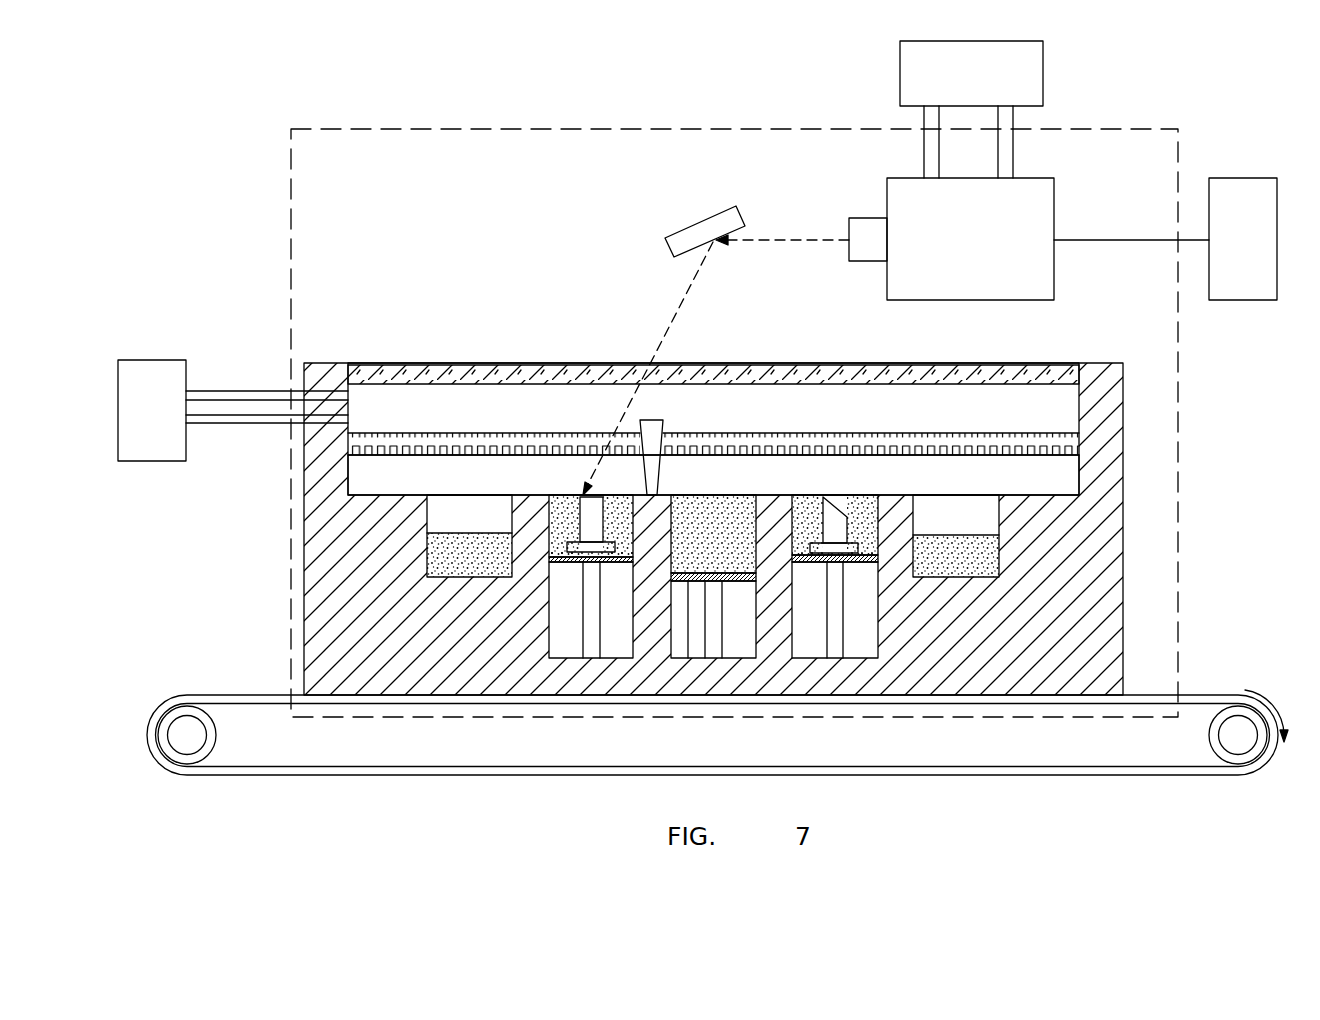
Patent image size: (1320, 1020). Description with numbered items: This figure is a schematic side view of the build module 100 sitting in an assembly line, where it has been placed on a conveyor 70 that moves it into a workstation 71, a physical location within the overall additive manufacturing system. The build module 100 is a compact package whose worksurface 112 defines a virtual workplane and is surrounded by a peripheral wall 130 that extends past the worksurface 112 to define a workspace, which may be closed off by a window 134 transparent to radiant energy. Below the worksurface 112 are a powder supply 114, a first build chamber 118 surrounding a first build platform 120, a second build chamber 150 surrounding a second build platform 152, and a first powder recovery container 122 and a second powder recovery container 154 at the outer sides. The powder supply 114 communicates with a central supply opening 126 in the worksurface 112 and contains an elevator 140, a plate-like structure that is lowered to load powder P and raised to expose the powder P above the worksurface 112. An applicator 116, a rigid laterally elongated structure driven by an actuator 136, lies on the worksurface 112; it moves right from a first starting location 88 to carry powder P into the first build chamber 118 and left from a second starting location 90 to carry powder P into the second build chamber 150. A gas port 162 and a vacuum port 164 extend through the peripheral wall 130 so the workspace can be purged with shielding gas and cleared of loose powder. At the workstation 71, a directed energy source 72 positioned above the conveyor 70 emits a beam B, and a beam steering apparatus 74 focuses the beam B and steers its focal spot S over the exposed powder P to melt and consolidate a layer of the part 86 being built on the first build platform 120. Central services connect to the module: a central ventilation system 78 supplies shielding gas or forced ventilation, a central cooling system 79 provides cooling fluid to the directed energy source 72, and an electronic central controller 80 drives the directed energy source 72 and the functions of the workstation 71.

The conveyor 70 is at (1186, 694).
The workstation 71 is at (375, 127).
The directed energy source 72 is at (988, 241).
The beam steering apparatus 74 is at (697, 212).
The central ventilation system 78 is at (169, 425).
The central cooling system 79 is at (988, 87).
The electronic central controller 80 is at (1260, 253).
The part 86 is at (588, 521).
The first starting location 88 is at (586, 490).
The second starting location 90 is at (765, 495).
The build module 100 is at (1056, 350).
The worksurface 112 is at (1055, 493).
The powder supply 114 is at (699, 504).
The applicator 116 is at (656, 420).
The first build chamber 118 is at (871, 505).
The first build platform 120 is at (855, 651).
The first powder recovery container 122 is at (951, 502).
The central supply opening 126 is at (750, 506).
The peripheral wall 130 is at (330, 477).
The window 134 is at (480, 366).
The actuator 136 is at (843, 437).
The elevator 140 is at (688, 583).
The second build chamber 150 is at (556, 515).
The second build platform 152 is at (596, 652).
The second powder recovery container 154 is at (438, 503).
The gas port 162 is at (329, 392).
The vacuum port 164 is at (337, 418).
The beam B is at (690, 283).
The powder P is at (722, 547).
The focal spot S is at (590, 512).